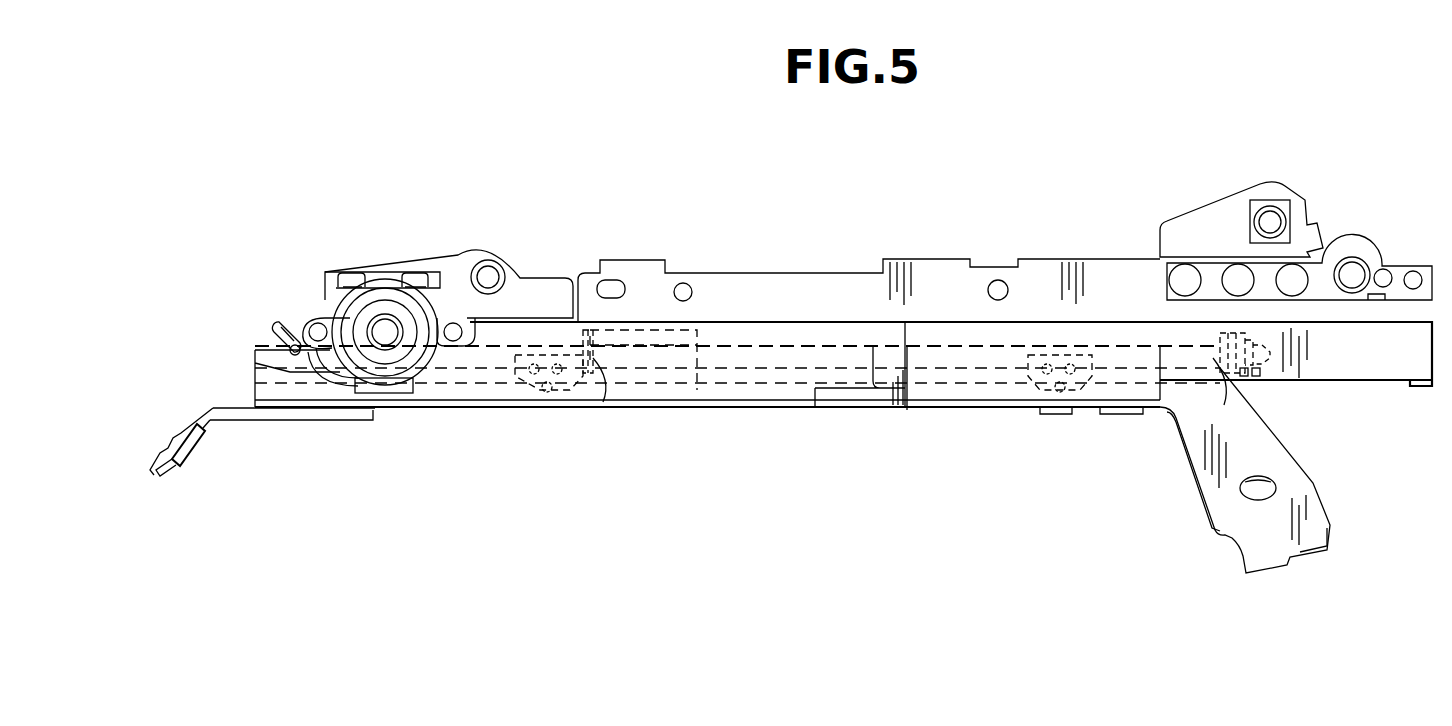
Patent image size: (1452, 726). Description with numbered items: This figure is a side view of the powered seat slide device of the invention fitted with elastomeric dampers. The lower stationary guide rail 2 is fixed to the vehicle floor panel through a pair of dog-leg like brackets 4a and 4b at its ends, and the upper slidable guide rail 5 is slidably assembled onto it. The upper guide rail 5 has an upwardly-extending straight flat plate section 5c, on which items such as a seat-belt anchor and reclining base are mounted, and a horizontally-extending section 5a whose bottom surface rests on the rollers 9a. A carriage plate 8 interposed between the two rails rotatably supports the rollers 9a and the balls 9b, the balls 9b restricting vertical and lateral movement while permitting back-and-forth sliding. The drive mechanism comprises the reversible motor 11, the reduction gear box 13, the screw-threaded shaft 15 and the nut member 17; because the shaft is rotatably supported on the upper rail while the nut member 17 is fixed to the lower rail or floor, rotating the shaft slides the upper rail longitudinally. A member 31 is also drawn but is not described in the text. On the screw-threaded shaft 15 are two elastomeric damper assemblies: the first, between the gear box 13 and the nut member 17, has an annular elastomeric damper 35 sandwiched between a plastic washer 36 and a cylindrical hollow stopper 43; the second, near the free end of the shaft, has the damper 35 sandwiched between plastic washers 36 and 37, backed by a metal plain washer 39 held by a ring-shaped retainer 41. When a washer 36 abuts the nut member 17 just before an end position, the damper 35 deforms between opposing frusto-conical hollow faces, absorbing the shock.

The lower stationary guide rail 2 is at (793, 410).
The dog-leg like bracket 4a is at (185, 430).
The dog-leg like bracket 4b is at (1207, 520).
The upper slidable guide rail 5 is at (1005, 258).
The horizontally-extending section 5a is at (1397, 383).
The upwardly-extending straight flat plate section 5c is at (852, 295).
The carriage plate 8 is at (529, 378).
The rollers 9a is at (548, 392).
The balls 9b is at (545, 374).
The reversible motor 11 is at (383, 330).
The reduction gear box 13 is at (390, 300).
The screw-threaded shaft 15 is at (797, 355).
The nut member 17 is at (687, 392).
The clamp block 31 is at (1295, 200).
The elastomeric damper 35 is at (583, 337).
The plastic washer 36 is at (590, 372).
The plastic washer 37 is at (1249, 378).
The metal plain washer 39 is at (1260, 378).
The retainer 41 is at (1257, 338).
The stopper 43 is at (490, 388).